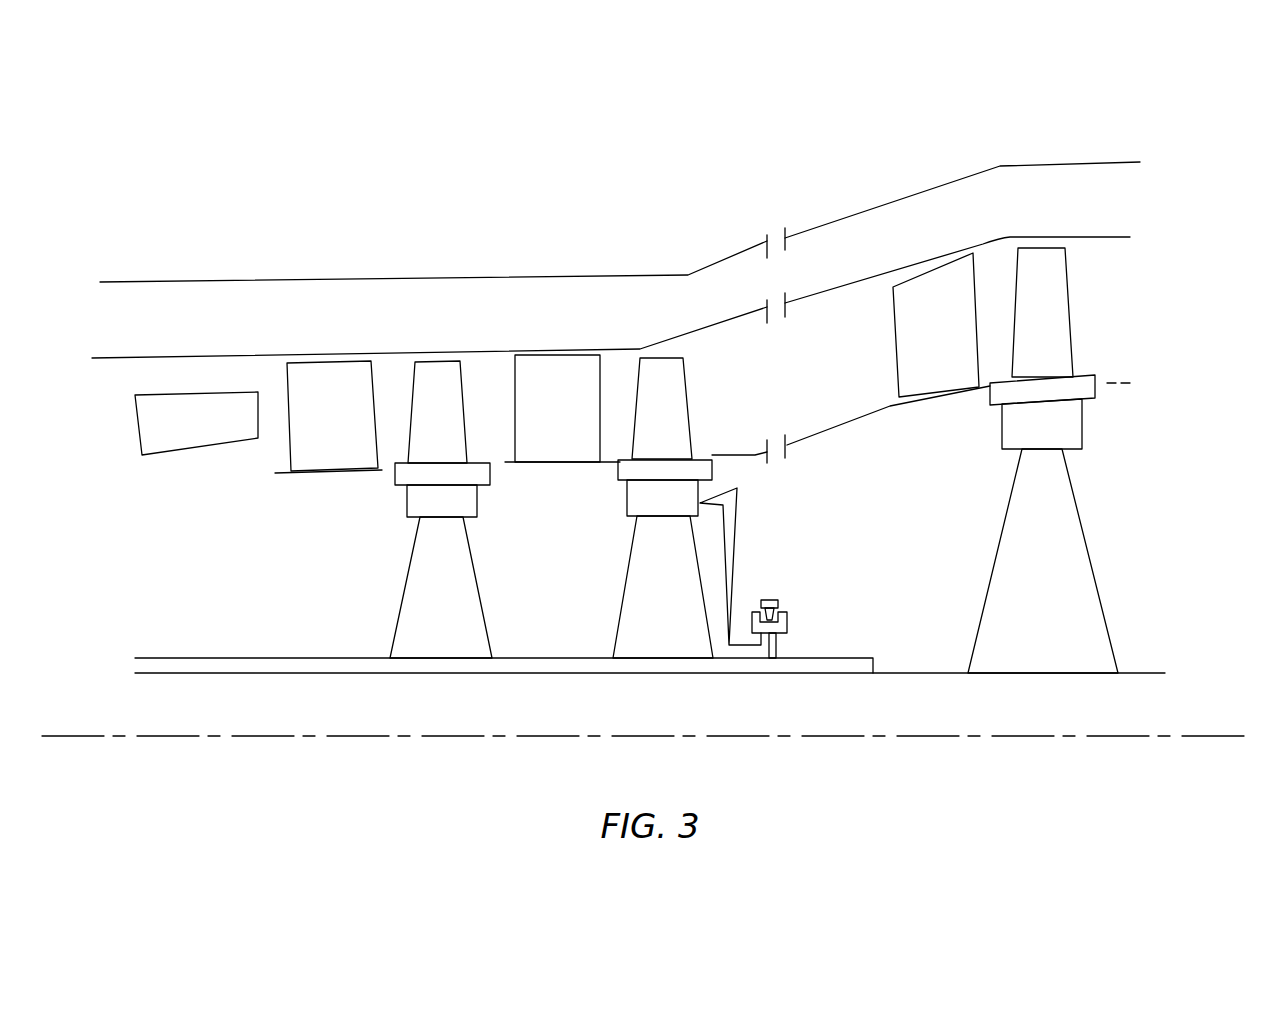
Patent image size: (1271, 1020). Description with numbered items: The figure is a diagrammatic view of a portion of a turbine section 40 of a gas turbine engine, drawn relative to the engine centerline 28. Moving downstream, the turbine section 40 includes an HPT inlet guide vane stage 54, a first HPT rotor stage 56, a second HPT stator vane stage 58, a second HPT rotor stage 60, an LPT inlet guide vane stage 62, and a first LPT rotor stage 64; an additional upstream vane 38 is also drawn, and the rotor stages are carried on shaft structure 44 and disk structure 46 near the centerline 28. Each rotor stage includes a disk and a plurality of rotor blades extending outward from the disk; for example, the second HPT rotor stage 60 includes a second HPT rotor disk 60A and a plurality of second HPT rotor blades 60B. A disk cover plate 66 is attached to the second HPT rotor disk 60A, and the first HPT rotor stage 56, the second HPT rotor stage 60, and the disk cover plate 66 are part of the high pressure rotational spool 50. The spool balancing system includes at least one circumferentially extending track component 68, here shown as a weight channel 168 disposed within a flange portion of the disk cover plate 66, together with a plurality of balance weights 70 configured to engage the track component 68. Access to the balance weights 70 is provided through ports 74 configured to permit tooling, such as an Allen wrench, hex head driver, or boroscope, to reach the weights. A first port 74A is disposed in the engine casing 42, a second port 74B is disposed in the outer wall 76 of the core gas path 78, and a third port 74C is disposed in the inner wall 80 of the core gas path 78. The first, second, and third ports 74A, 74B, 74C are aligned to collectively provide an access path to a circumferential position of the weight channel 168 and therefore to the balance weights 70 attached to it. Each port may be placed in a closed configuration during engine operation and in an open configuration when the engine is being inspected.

The centerline 28 is at (1228, 736).
The inlet guide vane 38 is at (157, 467).
The turbine section 40 is at (602, 173).
The engine casing 42 is at (1075, 163).
The shaft 44 is at (652, 673).
The rotor disk 46 is at (525, 658).
The high pressure rotational spool 50 is at (490, 681).
The HPT inlet guide vane stage 54 is at (315, 473).
The first HPT rotor stage 56 is at (398, 567).
The second HPT stator vane stage 58 is at (557, 463).
The second HPT rotor stage 60 is at (625, 508).
The second HPT rotor disk 60A is at (640, 603).
The second HPT rotor blades 60B is at (683, 432).
The LPT inlet guide vane stage 62 is at (940, 402).
The first LPT rotor stage 64 is at (1088, 485).
The disk cover plate 66 is at (741, 555).
The track component 68 is at (837, 631).
The weight channel 168 is at (780, 613).
The balance weights 70 is at (768, 598).
The ports 74 is at (845, 311).
The first port 74A is at (790, 230).
The second port 74B is at (790, 297).
The third port 74C is at (788, 438).
The outer wall 76 is at (720, 322).
The core gas path 78 is at (832, 333).
The inner wall 80 is at (862, 418).